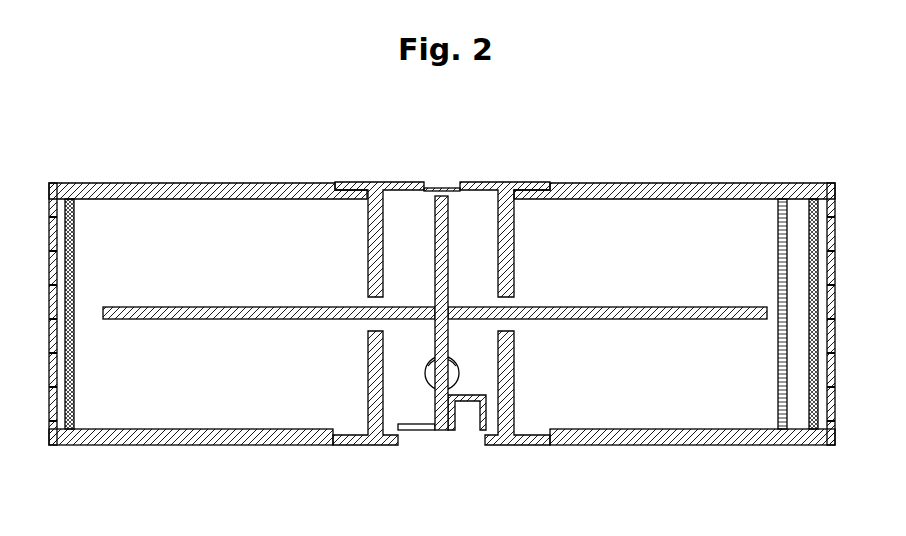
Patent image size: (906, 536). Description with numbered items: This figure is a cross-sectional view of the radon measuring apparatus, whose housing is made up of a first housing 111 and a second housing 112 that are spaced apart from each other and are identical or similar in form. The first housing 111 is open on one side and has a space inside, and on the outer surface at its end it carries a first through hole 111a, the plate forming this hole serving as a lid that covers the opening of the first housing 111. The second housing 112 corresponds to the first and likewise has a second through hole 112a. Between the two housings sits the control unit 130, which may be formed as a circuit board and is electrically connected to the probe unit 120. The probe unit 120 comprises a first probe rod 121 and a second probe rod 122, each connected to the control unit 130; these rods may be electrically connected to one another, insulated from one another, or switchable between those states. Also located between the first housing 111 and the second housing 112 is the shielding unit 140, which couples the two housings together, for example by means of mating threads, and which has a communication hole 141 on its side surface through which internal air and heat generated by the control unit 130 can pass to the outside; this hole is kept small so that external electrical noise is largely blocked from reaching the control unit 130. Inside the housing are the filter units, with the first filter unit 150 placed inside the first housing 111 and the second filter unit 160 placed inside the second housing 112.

The first housing 111 is at (203, 183).
The first through hole 111a is at (49, 249).
The second housing 112 is at (650, 184).
The second through hole 112a is at (835, 249).
The probe unit 120 is at (435, 209).
The first probe rod 121 is at (228, 307).
The second probe rod 122 is at (605, 302).
The control unit 130 is at (438, 402).
The shielding unit 140 is at (497, 182).
The communication hole 141 is at (441, 187).
The first filter unit 150 is at (77, 376).
The second filter unit 160 is at (778, 379).